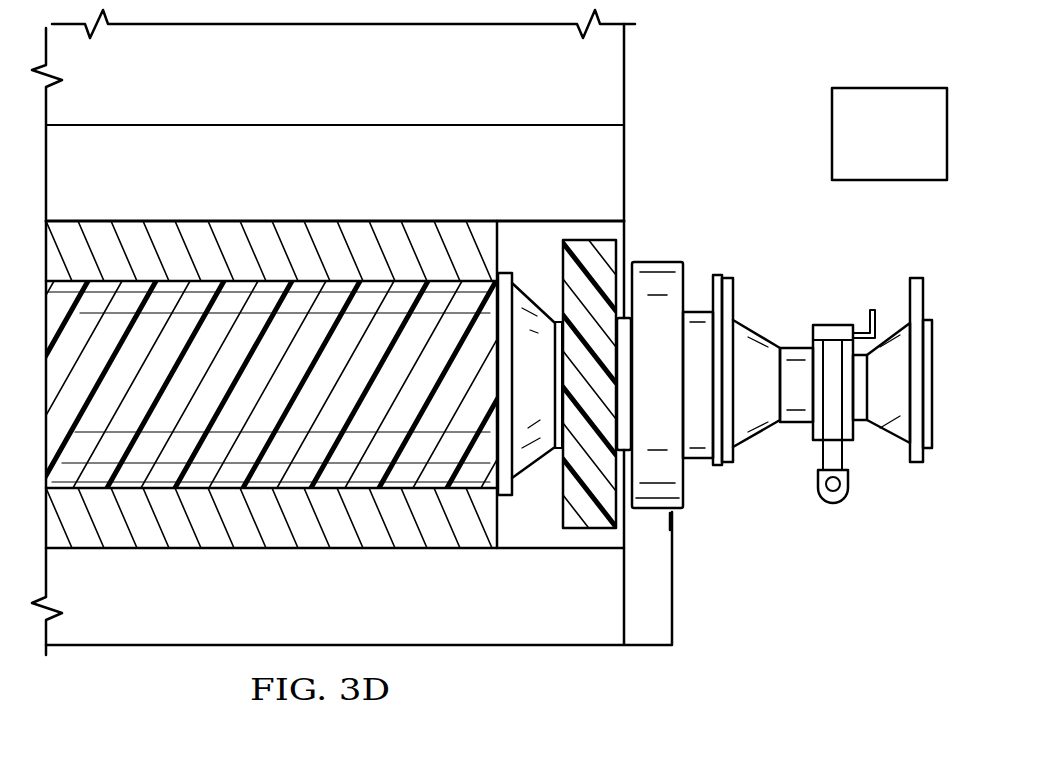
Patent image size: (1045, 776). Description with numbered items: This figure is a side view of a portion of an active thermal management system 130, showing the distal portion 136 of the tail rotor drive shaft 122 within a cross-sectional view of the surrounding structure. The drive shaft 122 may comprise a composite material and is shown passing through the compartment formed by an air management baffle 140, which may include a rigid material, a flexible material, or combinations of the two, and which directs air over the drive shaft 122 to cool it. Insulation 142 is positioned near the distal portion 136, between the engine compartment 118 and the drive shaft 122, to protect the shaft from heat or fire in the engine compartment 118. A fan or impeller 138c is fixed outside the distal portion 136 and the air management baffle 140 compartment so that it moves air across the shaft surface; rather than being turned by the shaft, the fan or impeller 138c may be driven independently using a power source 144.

The engine compartment 118 is at (357, 87).
The insulation 142 is at (357, 187).
The air management baffle 140 is at (357, 262).
The tail rotor drive shaft 122 is at (352, 397).
The fan or impeller 138c is at (562, 262).
The active thermal management system 130 is at (760, 89).
The distal portion 136 is at (712, 508).
The power source 144 is at (626, 262).